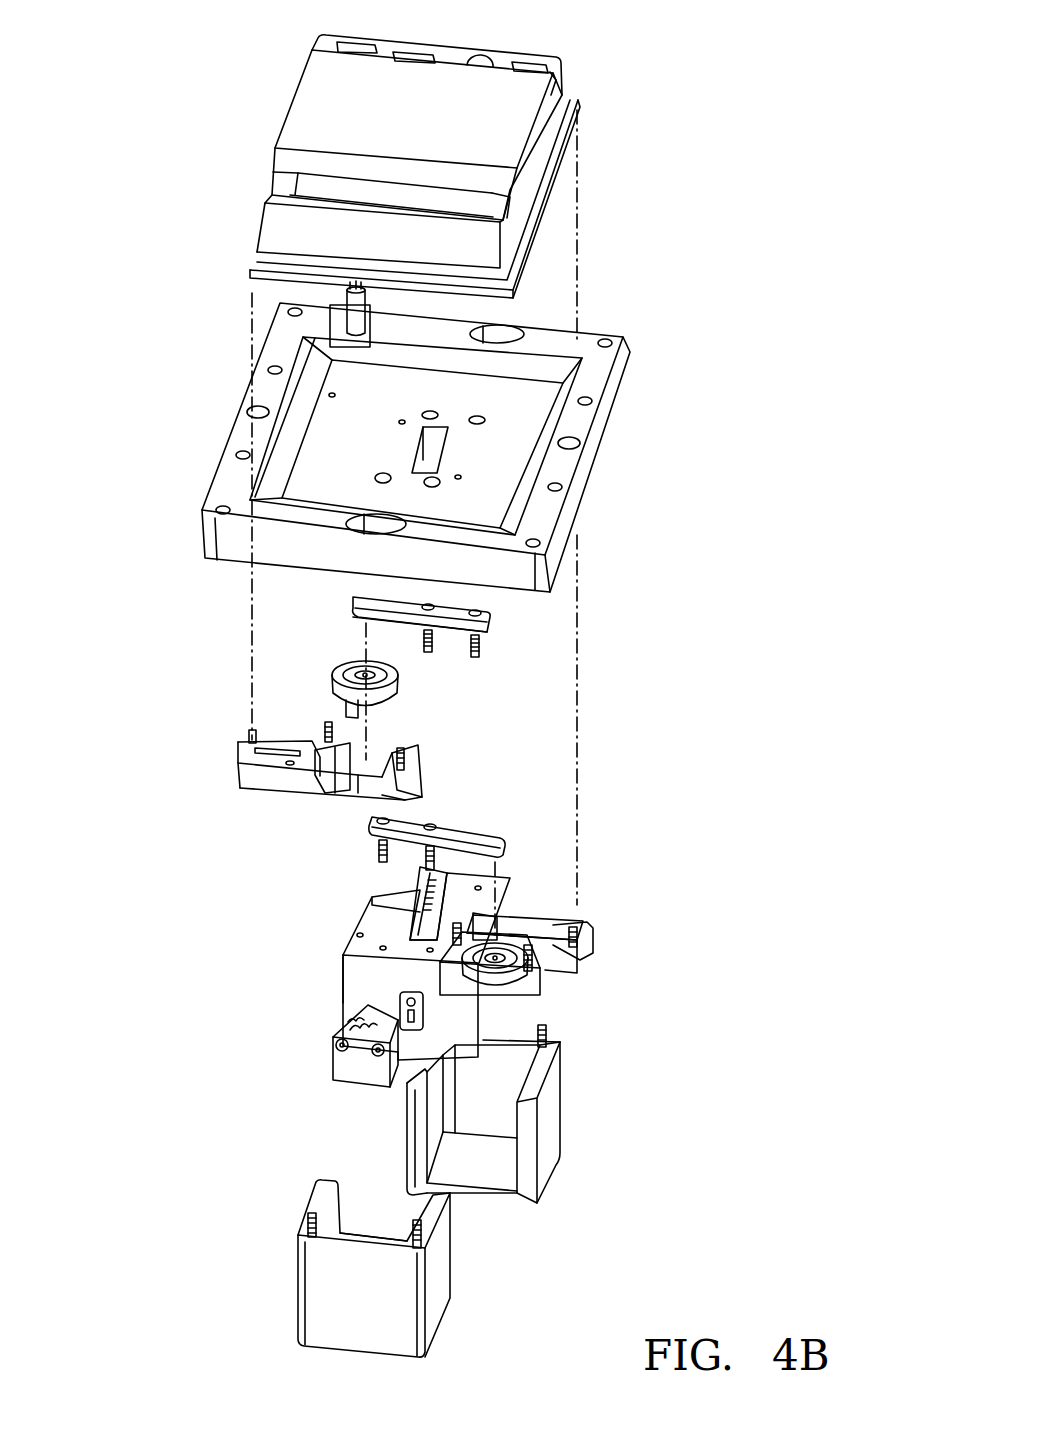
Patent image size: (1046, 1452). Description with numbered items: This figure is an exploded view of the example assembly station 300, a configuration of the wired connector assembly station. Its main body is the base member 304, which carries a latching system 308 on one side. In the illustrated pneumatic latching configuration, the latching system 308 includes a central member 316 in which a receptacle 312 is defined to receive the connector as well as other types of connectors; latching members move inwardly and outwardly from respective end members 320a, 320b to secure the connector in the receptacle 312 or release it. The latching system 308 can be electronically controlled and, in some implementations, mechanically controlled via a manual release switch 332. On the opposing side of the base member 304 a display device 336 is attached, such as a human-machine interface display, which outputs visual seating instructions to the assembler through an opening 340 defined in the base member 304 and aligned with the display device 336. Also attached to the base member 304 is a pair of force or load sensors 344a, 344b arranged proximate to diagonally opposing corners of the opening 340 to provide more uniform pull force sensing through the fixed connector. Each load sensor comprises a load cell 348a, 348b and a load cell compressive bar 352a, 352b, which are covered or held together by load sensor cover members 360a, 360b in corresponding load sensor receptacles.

The assembly station 300 is at (176, 51).
The base member 304 is at (597, 455).
The latching system 308 is at (748, 942).
The receptacle 312 is at (413, 910).
The central member 316 is at (353, 977).
The end member 320a is at (550, 1135).
The end member 320b is at (297, 1297).
The manual release switch 332 is at (347, 303).
The display device 336 is at (548, 122).
The opening 340 is at (430, 458).
The load sensor 344a is at (597, 888).
The load sensor 344b is at (487, 704).
The load cell 348a is at (507, 983).
The load cell 348b is at (332, 688).
The load cell compressive bar 352a is at (503, 827).
The load cell compressive bar 352b is at (487, 625).
The load sensor cover member 360a is at (593, 957).
The load sensor cover member 360b is at (243, 785).